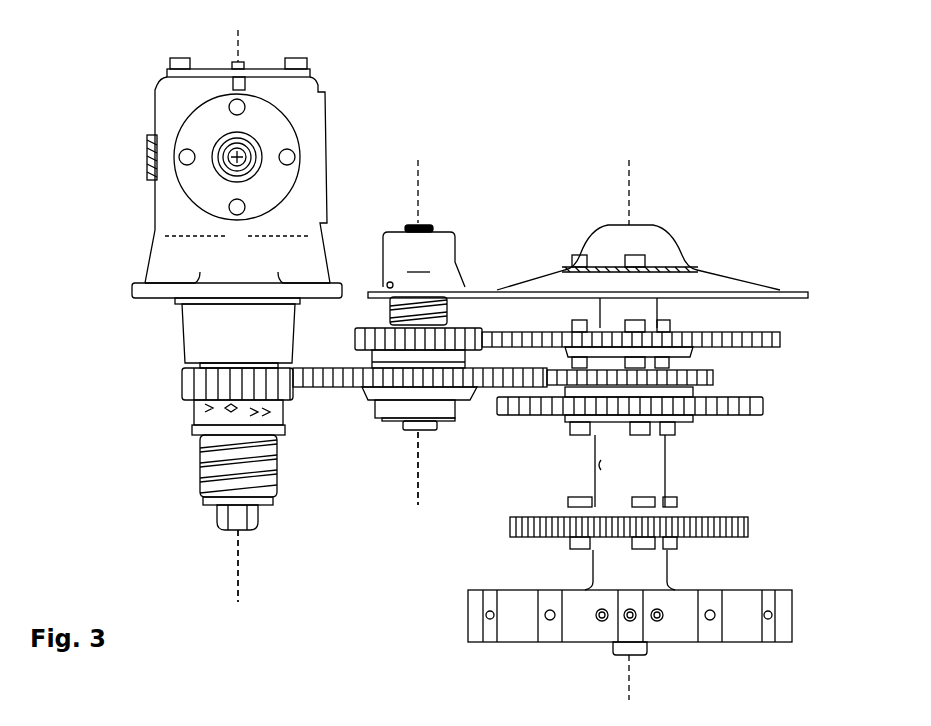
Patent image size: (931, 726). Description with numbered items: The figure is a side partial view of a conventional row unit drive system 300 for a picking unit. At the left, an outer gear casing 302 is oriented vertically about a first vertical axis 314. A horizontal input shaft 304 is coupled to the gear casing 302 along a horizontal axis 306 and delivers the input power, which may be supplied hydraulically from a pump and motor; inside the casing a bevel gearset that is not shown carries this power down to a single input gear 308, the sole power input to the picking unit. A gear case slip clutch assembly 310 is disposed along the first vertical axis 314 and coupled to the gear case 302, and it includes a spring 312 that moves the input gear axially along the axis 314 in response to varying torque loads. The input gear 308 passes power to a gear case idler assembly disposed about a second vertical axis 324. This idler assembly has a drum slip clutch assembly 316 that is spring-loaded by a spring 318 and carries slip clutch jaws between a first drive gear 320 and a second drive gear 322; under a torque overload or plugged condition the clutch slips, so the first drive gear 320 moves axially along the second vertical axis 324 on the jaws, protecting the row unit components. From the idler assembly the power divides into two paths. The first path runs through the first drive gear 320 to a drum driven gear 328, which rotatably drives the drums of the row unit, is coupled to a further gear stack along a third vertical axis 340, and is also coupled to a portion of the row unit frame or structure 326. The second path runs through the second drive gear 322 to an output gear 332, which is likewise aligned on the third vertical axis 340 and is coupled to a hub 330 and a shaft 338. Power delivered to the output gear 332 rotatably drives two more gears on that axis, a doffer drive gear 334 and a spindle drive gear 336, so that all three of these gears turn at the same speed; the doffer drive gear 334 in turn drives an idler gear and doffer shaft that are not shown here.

The row unit drive system 300 is at (745, 110).
The outer gear casing 302 is at (168, 200).
The horizontal input shaft 304 is at (258, 150).
The horizontal axis 306 is at (215, 134).
The input gear 308 is at (182, 378).
The gear case slip clutch assembly 310 is at (171, 481).
The spring 312 is at (200, 470).
The first vertical axis 314 is at (240, 580).
The drum slip clutch assembly 316 is at (423, 222).
The spring 318 is at (447, 312).
The first drive gear 320 is at (368, 326).
The second drive gear 322 is at (323, 388).
The second vertical axis 324 is at (418, 483).
The row unit frame or structure 326 is at (720, 278).
The drum driven gear 328 is at (780, 338).
The hub 330 is at (690, 391).
The output gear 332 is at (713, 378).
The doffer drive gear 334 is at (765, 405).
The spindle drive gear 336 is at (748, 525).
The shaft 338 is at (650, 450).
The third vertical axis 340 is at (625, 680).